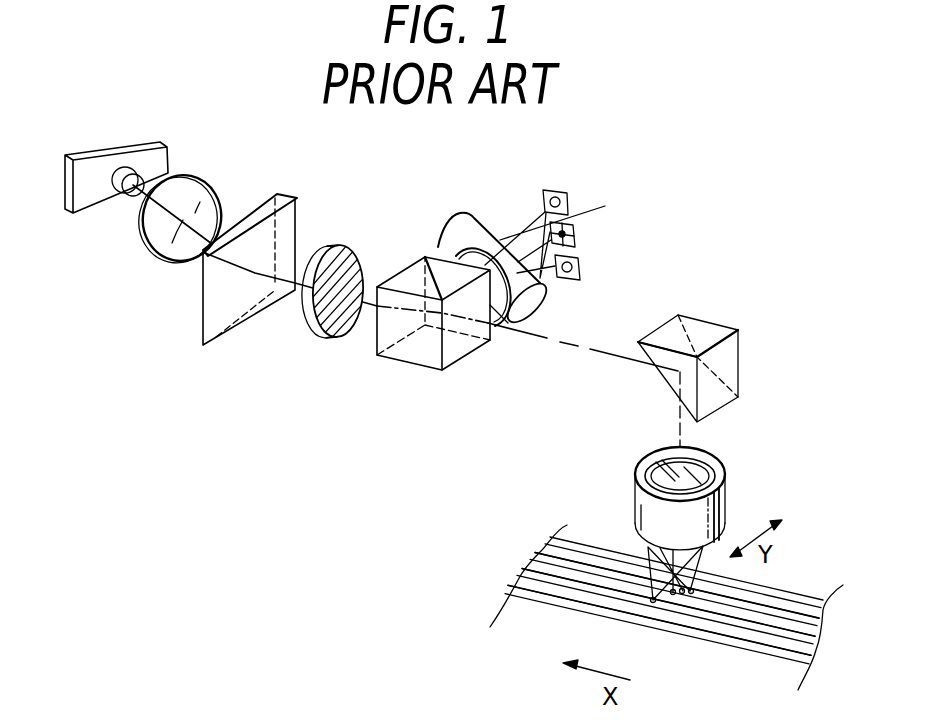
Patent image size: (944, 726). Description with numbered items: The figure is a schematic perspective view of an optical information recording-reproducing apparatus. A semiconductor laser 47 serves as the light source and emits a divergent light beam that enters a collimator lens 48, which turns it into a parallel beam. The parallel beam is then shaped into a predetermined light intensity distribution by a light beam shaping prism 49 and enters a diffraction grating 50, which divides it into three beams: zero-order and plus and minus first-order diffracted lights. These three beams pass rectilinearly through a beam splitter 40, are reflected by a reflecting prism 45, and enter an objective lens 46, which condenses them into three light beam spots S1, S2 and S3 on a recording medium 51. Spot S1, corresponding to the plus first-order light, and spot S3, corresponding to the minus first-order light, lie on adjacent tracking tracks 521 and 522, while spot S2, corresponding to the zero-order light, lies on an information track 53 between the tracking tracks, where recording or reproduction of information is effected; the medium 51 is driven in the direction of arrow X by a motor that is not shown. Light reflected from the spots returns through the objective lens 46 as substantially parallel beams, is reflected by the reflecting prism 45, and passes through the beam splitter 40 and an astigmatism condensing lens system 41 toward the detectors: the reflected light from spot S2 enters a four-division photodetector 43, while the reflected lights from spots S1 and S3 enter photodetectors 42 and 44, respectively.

The beam splitter 40 is at (404, 372).
The astigmatism condensing lens system 41 is at (468, 213).
The photodetector 42 is at (569, 202).
The four-division photodetector 43 is at (576, 238).
The photodetector 44 is at (581, 270).
The reflecting prism 45 is at (728, 322).
The objective lens 46 is at (726, 489).
The semiconductor laser 47 is at (147, 146).
The collimator lens 48 is at (216, 178).
The light beam shaping prism 49 is at (290, 195).
The diffraction grating 50 is at (350, 250).
The recording medium 51 is at (530, 566).
The tracking track 522 is at (822, 613).
The information track 53 is at (820, 634).
The tracking track 521 is at (816, 656).
The light beam spot S1 is at (652, 604).
The light beam spot S2 is at (672, 596).
The light beam spot S3 is at (690, 594).